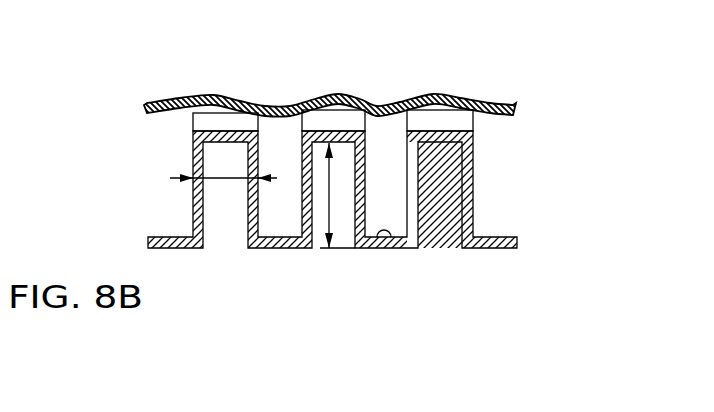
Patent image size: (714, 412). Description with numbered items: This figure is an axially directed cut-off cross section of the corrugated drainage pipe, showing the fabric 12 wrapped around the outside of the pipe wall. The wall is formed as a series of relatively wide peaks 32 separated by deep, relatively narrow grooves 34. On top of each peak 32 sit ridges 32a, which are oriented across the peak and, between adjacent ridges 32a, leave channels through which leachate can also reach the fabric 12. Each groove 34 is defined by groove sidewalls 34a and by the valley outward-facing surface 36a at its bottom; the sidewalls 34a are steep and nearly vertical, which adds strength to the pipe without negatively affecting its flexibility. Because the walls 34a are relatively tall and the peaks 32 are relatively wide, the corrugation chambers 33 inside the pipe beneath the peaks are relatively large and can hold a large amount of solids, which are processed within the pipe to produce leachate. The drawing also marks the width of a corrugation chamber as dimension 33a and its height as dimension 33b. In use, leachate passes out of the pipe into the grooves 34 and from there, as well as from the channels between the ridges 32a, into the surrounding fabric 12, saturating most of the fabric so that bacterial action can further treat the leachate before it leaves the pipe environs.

The fabric 12 is at (340, 98).
The peaks 32 is at (488, 125).
The ridges 32a is at (210, 121).
The corrugation chambers 33 is at (227, 244).
The channel width 33a is at (215, 180).
The channel height 33b is at (329, 194).
The grooves 34 is at (285, 192).
The groove sidewalls 34a is at (473, 188).
The valley outward-facing surface 36a is at (380, 238).